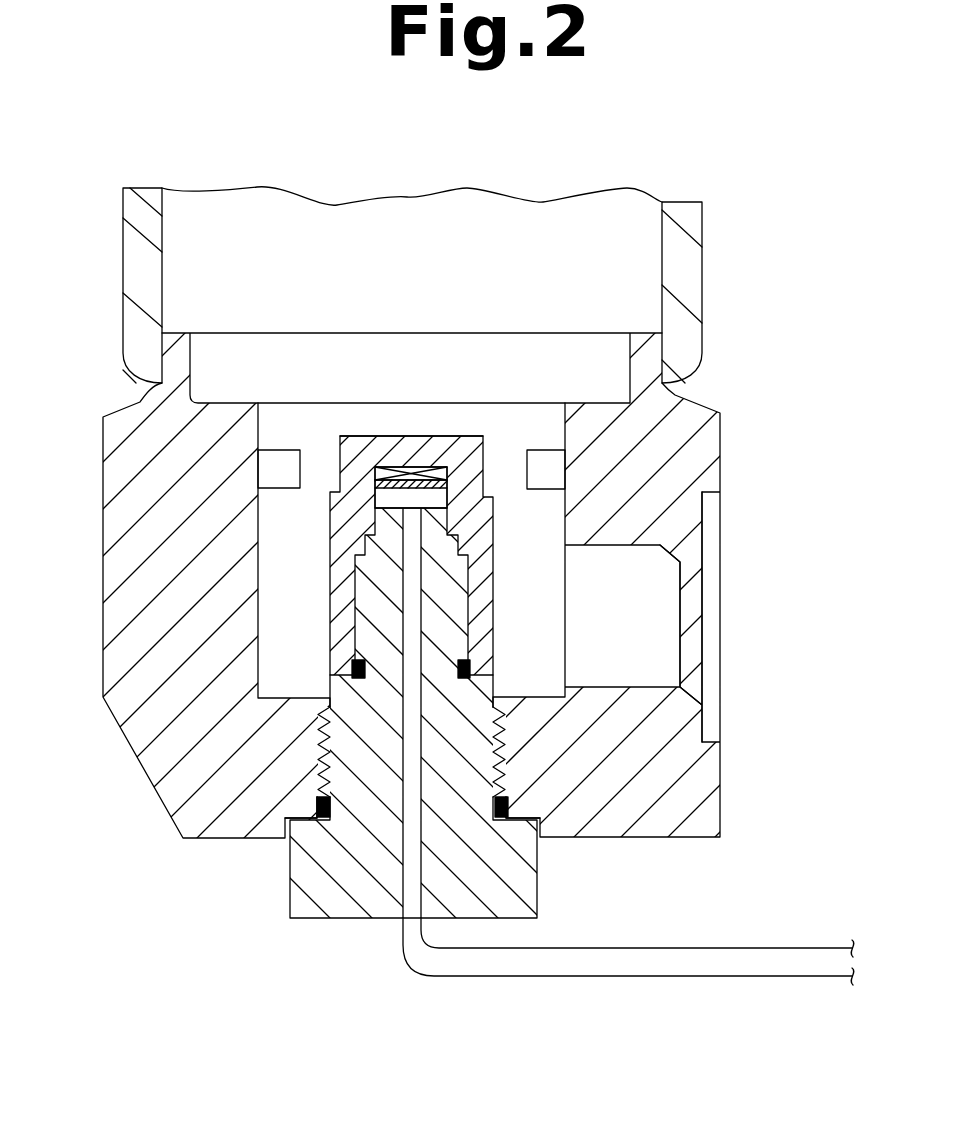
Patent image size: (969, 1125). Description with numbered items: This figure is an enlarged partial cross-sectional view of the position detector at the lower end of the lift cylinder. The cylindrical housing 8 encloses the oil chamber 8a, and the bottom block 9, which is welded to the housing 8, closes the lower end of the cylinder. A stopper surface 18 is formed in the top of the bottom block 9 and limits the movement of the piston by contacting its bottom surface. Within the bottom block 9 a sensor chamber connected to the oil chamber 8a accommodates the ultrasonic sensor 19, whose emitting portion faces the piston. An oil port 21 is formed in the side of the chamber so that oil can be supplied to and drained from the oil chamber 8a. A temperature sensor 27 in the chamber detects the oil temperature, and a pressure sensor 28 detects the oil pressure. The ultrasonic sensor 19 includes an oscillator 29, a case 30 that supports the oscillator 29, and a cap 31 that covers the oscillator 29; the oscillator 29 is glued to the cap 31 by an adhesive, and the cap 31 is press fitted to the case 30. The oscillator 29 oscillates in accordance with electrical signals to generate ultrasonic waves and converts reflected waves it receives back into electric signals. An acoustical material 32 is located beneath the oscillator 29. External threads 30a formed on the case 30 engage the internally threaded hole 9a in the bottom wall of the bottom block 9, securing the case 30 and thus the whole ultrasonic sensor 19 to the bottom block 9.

The cylindrical housing 8 is at (692, 252).
The oil chamber 8a is at (153, 255).
The bottom block 9 is at (712, 430).
The internally threaded hole 9a is at (326, 790).
The stopper surface 18 is at (225, 400).
The ultrasonic sensor 19 is at (403, 436).
The oil port 21 is at (680, 563).
The temperature sensor 27 is at (277, 462).
The pressure sensor 28 is at (542, 462).
The oscillator 29 is at (448, 493).
The case 30 is at (290, 890).
The external threads 30a is at (320, 757).
The cap 31 is at (358, 447).
The acoustical material 32 is at (448, 495).